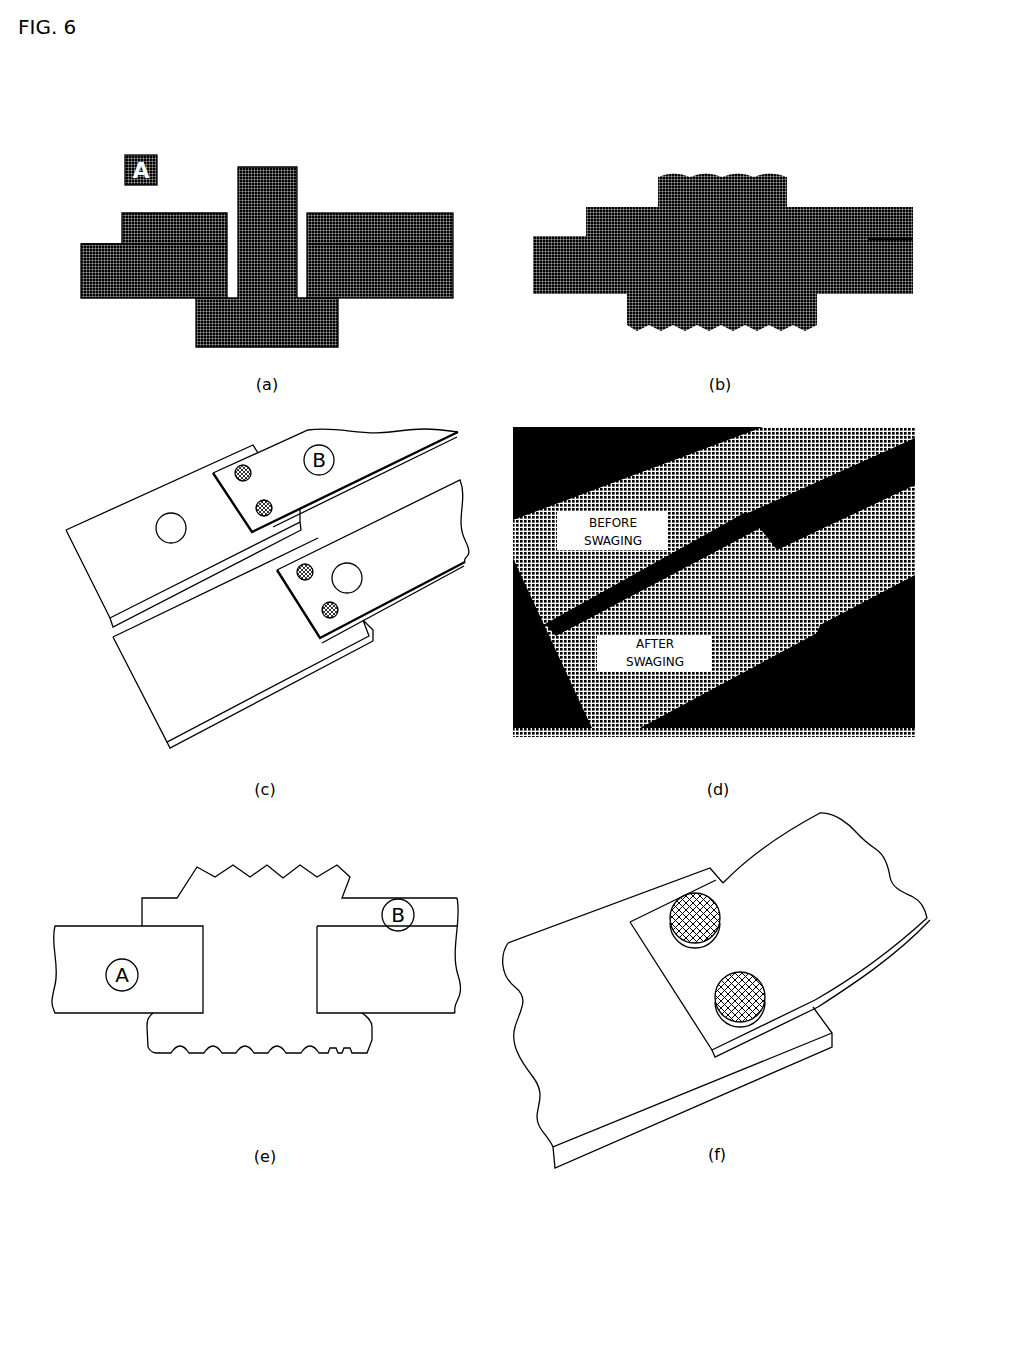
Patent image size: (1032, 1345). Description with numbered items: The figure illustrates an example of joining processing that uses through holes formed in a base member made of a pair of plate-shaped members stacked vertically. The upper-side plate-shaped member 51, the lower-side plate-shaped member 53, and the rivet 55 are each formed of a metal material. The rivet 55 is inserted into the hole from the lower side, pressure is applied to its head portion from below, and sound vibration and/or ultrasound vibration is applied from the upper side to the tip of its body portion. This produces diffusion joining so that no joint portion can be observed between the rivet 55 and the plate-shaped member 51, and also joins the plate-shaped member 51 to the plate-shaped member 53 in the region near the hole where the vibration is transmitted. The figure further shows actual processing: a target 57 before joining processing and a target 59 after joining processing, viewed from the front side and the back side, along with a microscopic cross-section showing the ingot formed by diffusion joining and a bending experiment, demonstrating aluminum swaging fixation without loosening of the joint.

The upper-side plate-shaped member 51 is at (380, 213).
The lower-side plate-shaped member 53 is at (388, 297).
The rivet 55 is at (285, 167).
The target before joining processing 57 is at (132, 520).
The target after joining processing 59 is at (345, 633).